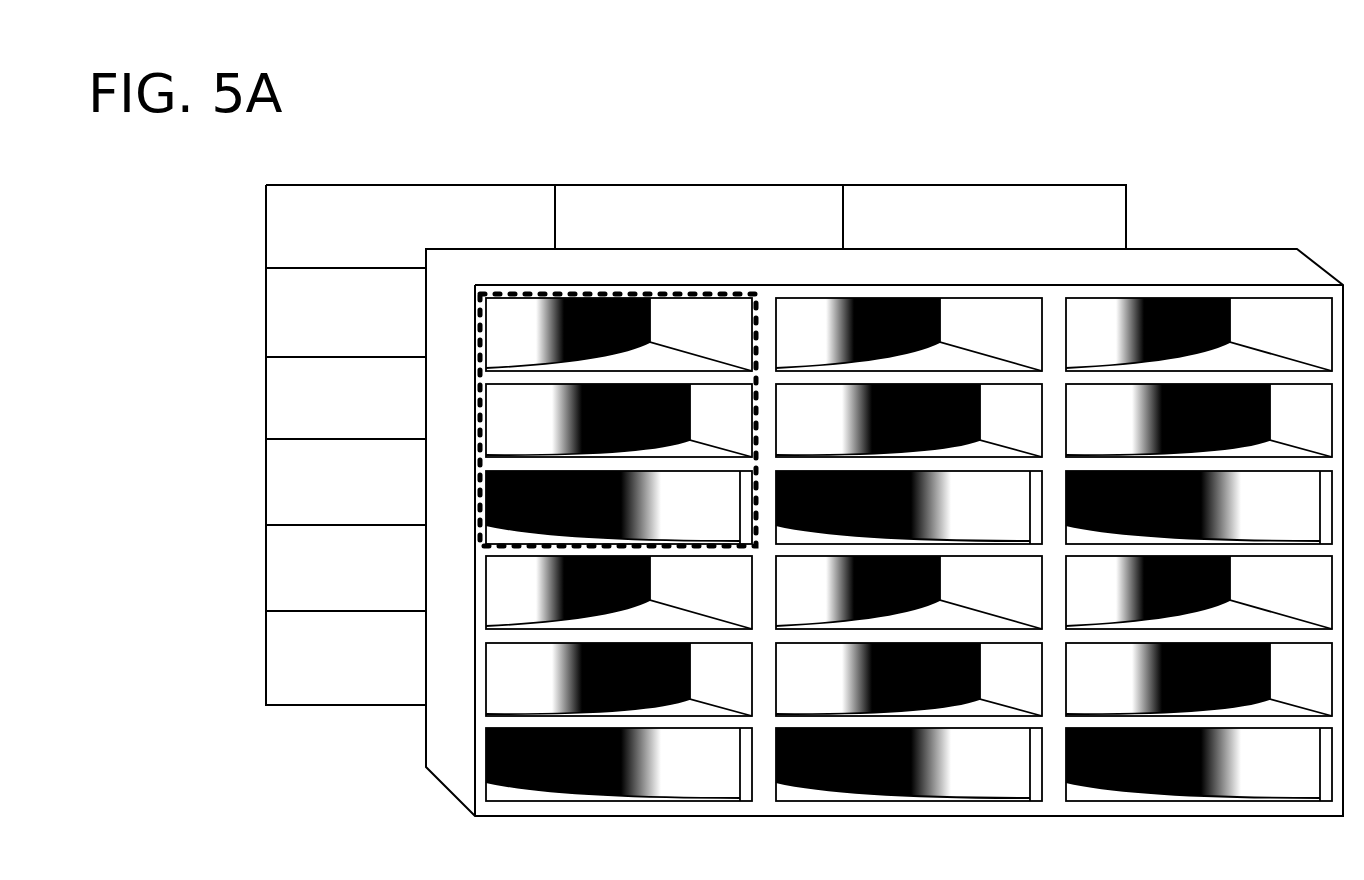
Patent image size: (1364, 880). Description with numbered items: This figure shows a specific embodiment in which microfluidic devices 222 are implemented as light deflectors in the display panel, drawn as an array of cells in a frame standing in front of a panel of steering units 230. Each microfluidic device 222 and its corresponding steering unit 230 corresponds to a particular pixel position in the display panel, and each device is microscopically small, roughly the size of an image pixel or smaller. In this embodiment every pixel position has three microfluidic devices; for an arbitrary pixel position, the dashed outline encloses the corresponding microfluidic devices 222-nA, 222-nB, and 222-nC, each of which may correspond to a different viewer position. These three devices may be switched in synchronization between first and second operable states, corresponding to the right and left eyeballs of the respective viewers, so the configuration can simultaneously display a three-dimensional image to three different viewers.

The steering unit 230 is at (362, 185).
The microfluidic device 222 is at (975, 298).
The microfluidic device 222-nA is at (503, 338).
The microfluidic device 222-nB is at (500, 417).
The microfluidic device 222-nC is at (503, 498).